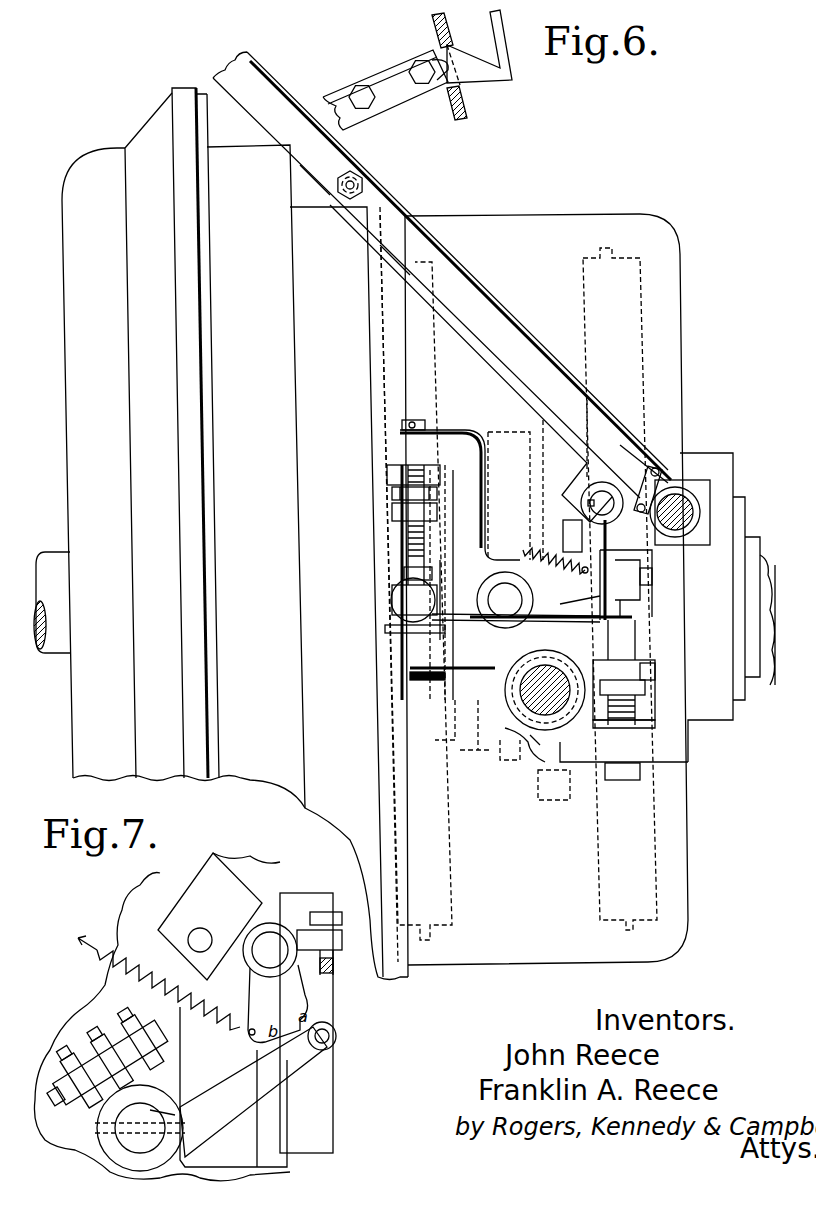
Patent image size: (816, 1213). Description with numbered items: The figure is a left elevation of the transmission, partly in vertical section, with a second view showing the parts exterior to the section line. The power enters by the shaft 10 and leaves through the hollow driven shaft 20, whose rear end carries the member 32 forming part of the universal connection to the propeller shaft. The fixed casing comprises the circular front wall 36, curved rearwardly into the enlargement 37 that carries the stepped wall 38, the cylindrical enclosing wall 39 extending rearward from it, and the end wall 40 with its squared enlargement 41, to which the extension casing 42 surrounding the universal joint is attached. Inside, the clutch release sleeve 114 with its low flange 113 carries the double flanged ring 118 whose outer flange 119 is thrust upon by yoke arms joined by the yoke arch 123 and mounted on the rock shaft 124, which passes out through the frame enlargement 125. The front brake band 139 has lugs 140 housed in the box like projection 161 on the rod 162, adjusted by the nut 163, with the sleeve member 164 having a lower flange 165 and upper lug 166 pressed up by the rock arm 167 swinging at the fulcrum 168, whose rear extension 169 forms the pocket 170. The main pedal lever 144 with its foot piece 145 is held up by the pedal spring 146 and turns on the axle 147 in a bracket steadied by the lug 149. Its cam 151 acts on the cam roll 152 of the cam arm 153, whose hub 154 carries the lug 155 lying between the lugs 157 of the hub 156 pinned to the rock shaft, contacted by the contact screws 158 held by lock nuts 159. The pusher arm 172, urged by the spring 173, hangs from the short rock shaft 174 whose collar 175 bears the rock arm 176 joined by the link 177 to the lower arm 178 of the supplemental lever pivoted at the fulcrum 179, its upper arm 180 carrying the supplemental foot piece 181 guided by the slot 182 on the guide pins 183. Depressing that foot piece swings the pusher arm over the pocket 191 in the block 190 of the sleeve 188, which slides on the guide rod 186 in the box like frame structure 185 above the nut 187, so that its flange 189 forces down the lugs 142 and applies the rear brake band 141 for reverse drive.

In FIG. 6, the shaft 10 is at (56, 556).
In FIG. 6, the driven shaft 20 is at (775, 575).
In FIG. 6, the member 32 is at (752, 545).
In FIG. 6, the front wall 36 is at (183, 478).
In FIG. 6, the enlargement 37 is at (148, 435).
In FIG. 6, the stepped wall 38 is at (290, 534).
In FIG. 6, the cylindrical enclosing wall 39 is at (518, 577).
In FIG. 7, the cylindrical enclosing wall 39 is at (152, 895).
In FIG. 6, the end wall 40 is at (683, 303).
In FIG. 6, the squared enlargement 41 is at (700, 453).
In FIG. 6, the extension casing 42 is at (748, 505).
In FIG. 6, the low flange 113 is at (450, 745).
In FIG. 6, the sleeve 114 is at (476, 730).
In FIG. 6, the double flanged ring 118 is at (520, 760).
In FIG. 6, the outer flange 119 is at (540, 770).
In FIG. 6, the yoke arch 123 is at (560, 800).
In FIG. 6, the rock shaft 124 is at (560, 730).
In FIG. 7, the rock shaft 124 is at (140, 1128).
In FIG. 6, the frame enlargement 125 is at (525, 733).
In FIG. 6, the brake band 139 is at (388, 476).
In FIG. 6, the lugs 140 is at (393, 512).
In FIG. 6, the brake band 141 is at (655, 705).
In FIG. 6, the lugs 142 is at (652, 575).
In FIG. 6, the main pedal lever 144 is at (333, 100).
In FIG. 6, the foot piece 145 is at (432, 30).
In FIG. 7, the foot piece 145 is at (210, 916).
In FIG. 7, the pedal spring 146 is at (107, 940).
In FIG. 6, the fulcrum or axle 147 is at (690, 490).
In FIG. 7, the fulcrum or axle 147 is at (270, 950).
In FIG. 6, the lug 149 is at (712, 500).
In FIG. 7, the lug 149 is at (303, 918).
In FIG. 7, the cam 151 is at (278, 1004).
In FIG. 7, the cam roll 152 is at (336, 1040).
In FIG. 7, the cam arm 153 is at (253, 1092).
In FIG. 7, the hub 154 is at (163, 1073).
In FIG. 7, the lug 155 is at (98, 1042).
In FIG. 7, the hub 156 is at (175, 1115).
In FIG. 7, the lugs 157 is at (65, 1062).
In FIG. 7, the contact screws 158 is at (140, 1020).
In FIG. 7, the lock nuts 159 is at (68, 1105).
In FIG. 6, the box like projection 161 is at (458, 432).
In FIG. 6, the rod 162 is at (405, 540).
In FIG. 6, the nut 163 is at (393, 494).
In FIG. 6, the sleeve member 164 is at (395, 590).
In FIG. 6, the lower flange 165 is at (386, 629).
In FIG. 6, the upper lug 166 is at (404, 572).
In FIG. 6, the rock arm 167 is at (443, 585).
In FIG. 6, the fulcrum 168 is at (505, 600).
In FIG. 6, the rear extension 169 is at (560, 625).
In FIG. 6, the pocket 170 is at (598, 604).
In FIG. 6, the pusher arm 172 is at (572, 593).
In FIG. 6, the spring 173 is at (525, 545).
In FIG. 6, the rock shaft 174 is at (594, 480).
In FIG. 6, the collar 175 is at (580, 480).
In FIG. 6, the rock arm 176 is at (636, 486).
In FIG. 6, the link 177 is at (664, 460).
In FIG. 6, the lower arm 178 is at (414, 222).
In FIG. 6, the fulcrum 179 is at (364, 178).
In FIG. 6, the upper arm 180 is at (333, 158).
In FIG. 6, the supplemental foot piece 181 is at (504, 88).
In FIG. 6, the slot 182 is at (380, 86).
In FIG. 6, the guide pins 183 is at (420, 60).
In FIG. 6, the box like frame structure 185 is at (683, 748).
In FIG. 6, the guide rod 186 is at (655, 652).
In FIG. 6, the nut 187 is at (646, 688).
In FIG. 6, the sleeve 188 is at (655, 585).
In FIG. 6, the flange 189 is at (642, 556).
In FIG. 6, the block 190 is at (650, 600).
In FIG. 6, the pocket 191 is at (636, 640).